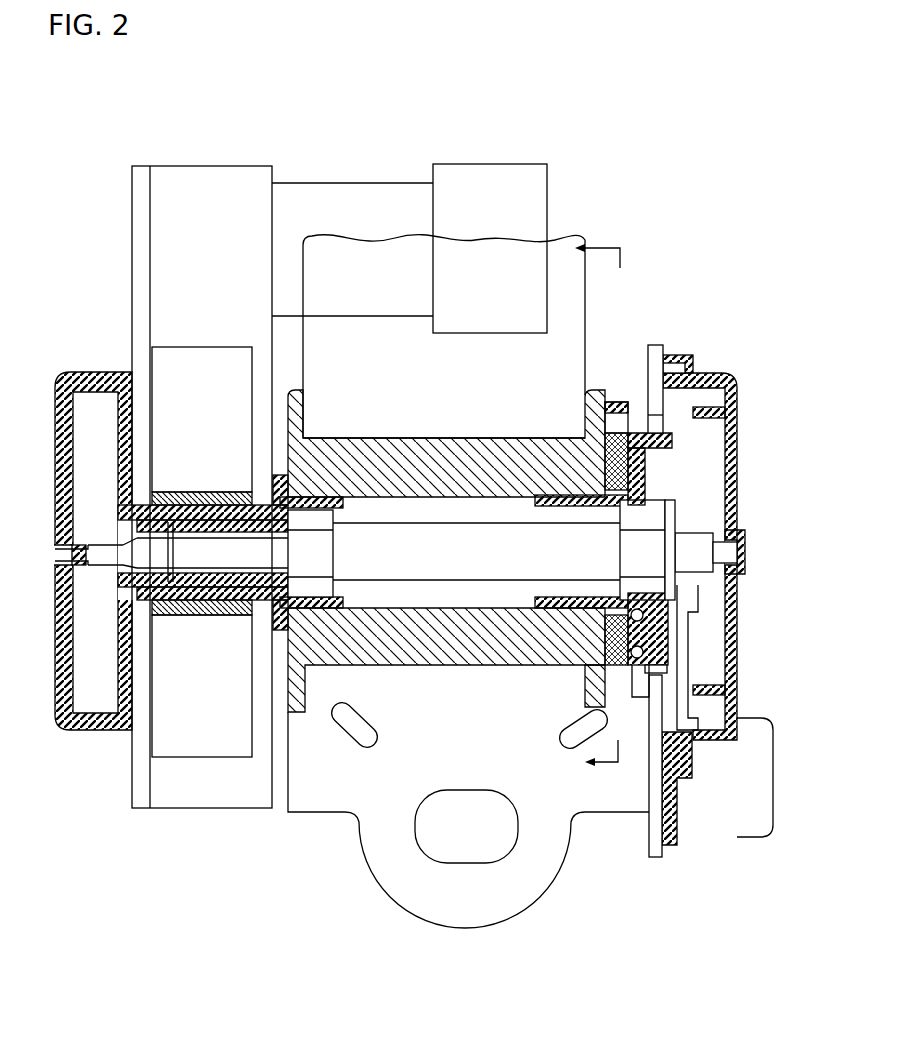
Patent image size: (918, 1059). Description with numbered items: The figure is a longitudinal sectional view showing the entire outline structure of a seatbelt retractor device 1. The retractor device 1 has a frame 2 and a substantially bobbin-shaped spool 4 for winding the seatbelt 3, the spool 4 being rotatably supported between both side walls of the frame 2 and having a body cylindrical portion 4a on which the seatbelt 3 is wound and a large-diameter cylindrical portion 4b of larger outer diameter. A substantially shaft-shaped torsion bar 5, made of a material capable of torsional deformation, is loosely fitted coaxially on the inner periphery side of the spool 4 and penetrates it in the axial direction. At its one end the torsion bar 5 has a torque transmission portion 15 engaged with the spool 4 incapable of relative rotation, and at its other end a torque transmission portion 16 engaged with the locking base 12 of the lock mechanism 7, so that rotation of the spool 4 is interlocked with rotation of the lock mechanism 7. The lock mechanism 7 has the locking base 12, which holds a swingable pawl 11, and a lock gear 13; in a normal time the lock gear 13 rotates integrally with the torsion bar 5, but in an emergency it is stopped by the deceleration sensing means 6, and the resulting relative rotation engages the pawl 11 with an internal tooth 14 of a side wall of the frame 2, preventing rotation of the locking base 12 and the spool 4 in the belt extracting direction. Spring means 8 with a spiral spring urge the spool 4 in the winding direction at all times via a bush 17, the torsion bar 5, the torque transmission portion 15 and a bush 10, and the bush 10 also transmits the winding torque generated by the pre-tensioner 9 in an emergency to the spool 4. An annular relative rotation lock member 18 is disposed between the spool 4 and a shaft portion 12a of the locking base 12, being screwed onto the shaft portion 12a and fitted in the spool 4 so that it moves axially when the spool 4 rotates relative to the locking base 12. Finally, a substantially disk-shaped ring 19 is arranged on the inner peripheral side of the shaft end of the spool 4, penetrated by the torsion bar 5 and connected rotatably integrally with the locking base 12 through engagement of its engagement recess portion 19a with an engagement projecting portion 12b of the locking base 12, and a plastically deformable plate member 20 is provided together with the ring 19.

The retractor device 1 is at (419, 515).
The frame 2 is at (322, 800).
The seatbelt 3 is at (398, 230).
The spool 4 is at (450, 602).
The body cylindrical portion 4a is at (415, 447).
The large-diameter cylindrical portion 4b is at (620, 745).
The torsion bar 5 is at (425, 530).
The deceleration sensing means 6 is at (695, 833).
The lock mechanism 7 is at (714, 360).
The spring means 8 is at (74, 363).
The pre-tensioner 9 is at (562, 193).
The bush 10 is at (215, 492).
The pawl 11 is at (638, 683).
The locking base 12 is at (668, 627).
The shaft portion 12a is at (578, 490).
The engagement projecting portion 12b is at (645, 467).
The lock gear 13 is at (703, 727).
The internal tooth 14 is at (708, 657).
The torque transmission portion 15 is at (273, 597).
The torque transmission portion 16 is at (653, 517).
The bush 17 is at (82, 583).
The relative rotation lock member 18 is at (548, 498).
The ring 19 is at (605, 658).
The engagement recess portion 19a is at (633, 427).
The plate member 20 is at (613, 413).